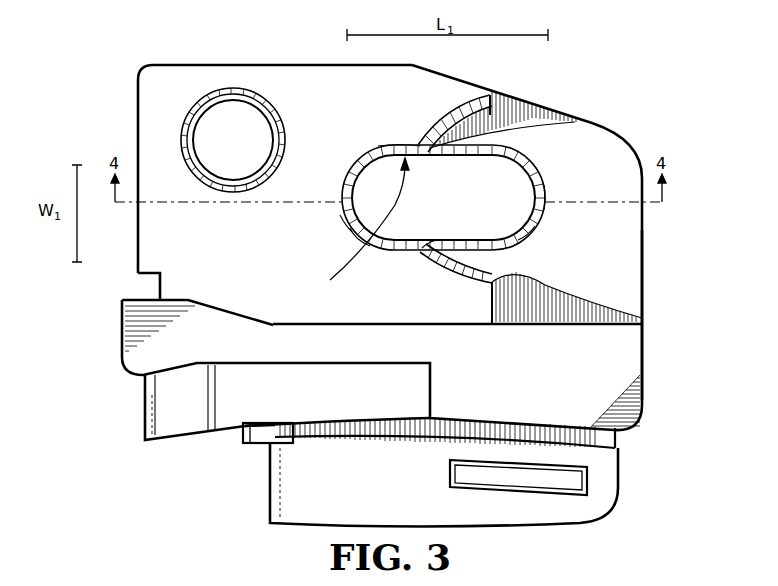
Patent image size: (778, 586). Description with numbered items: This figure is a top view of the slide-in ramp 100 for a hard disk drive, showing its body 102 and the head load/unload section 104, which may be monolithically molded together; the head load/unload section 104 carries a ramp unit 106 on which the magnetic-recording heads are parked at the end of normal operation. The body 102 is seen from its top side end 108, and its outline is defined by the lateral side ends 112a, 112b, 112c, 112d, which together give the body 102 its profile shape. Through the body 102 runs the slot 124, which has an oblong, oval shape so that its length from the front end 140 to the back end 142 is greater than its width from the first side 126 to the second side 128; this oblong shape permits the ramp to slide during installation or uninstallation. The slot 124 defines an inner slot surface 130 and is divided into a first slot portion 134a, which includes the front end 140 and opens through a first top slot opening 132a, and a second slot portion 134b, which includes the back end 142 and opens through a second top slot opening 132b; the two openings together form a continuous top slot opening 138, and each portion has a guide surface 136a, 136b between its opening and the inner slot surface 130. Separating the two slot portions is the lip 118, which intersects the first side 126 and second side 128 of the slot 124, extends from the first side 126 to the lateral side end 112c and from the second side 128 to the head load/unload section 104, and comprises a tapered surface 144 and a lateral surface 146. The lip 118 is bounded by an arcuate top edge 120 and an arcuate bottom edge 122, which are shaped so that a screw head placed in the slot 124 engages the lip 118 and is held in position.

The slide-in ramp 100 is at (655, 411).
The body 102 is at (645, 323).
The head load/unload section 104 is at (622, 432).
The ramp unit 106 is at (147, 412).
The top side end 108 is at (165, 78).
The lateral side end 112a is at (134, 253).
The lateral side end 112b is at (240, 65).
The lateral side end 112c is at (552, 114).
The lateral side end 112d is at (644, 293).
The lip 118 is at (451, 112).
The top edge 120 is at (446, 121).
The bottom edge 122 is at (422, 148).
The slot 124 is at (350, 228).
The first side 126 is at (378, 146).
The second side 128 is at (422, 249).
The inner slot surface 130 is at (357, 229).
The first top slot opening 132a is at (355, 150).
The second top slot opening 132b is at (545, 170).
The first slot portion 134a is at (342, 188).
The second slot portion 134b is at (548, 190).
The guide surface 136a is at (343, 200).
The guide surface 136b is at (540, 200).
The continuous top slot opening 138 is at (535, 230).
The front end 140 is at (341, 215).
The back end 142 is at (548, 202).
The tapered surface 144 is at (491, 98).
The lateral surface 146 is at (524, 153).